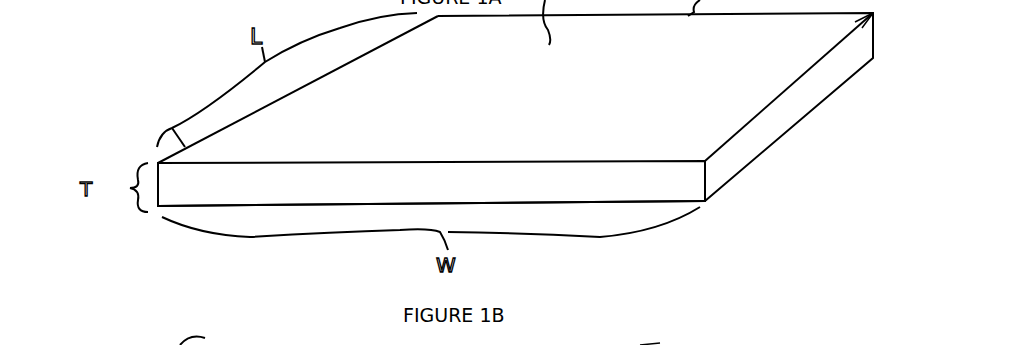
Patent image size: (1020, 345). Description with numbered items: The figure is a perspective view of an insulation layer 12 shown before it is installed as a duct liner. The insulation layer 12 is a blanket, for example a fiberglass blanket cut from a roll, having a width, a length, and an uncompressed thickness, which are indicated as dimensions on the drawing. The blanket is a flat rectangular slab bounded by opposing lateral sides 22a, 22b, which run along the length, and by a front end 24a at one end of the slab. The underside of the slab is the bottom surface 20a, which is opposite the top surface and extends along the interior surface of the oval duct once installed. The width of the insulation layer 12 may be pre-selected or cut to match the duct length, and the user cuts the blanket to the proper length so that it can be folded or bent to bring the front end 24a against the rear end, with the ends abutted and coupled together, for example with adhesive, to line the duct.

The insulation layer 12 is at (152, 88).
The lateral side 22a is at (170, 129).
The lateral side 22b is at (775, 124).
The front end 24a is at (248, 187).
The bottom surface 20a is at (626, 200).